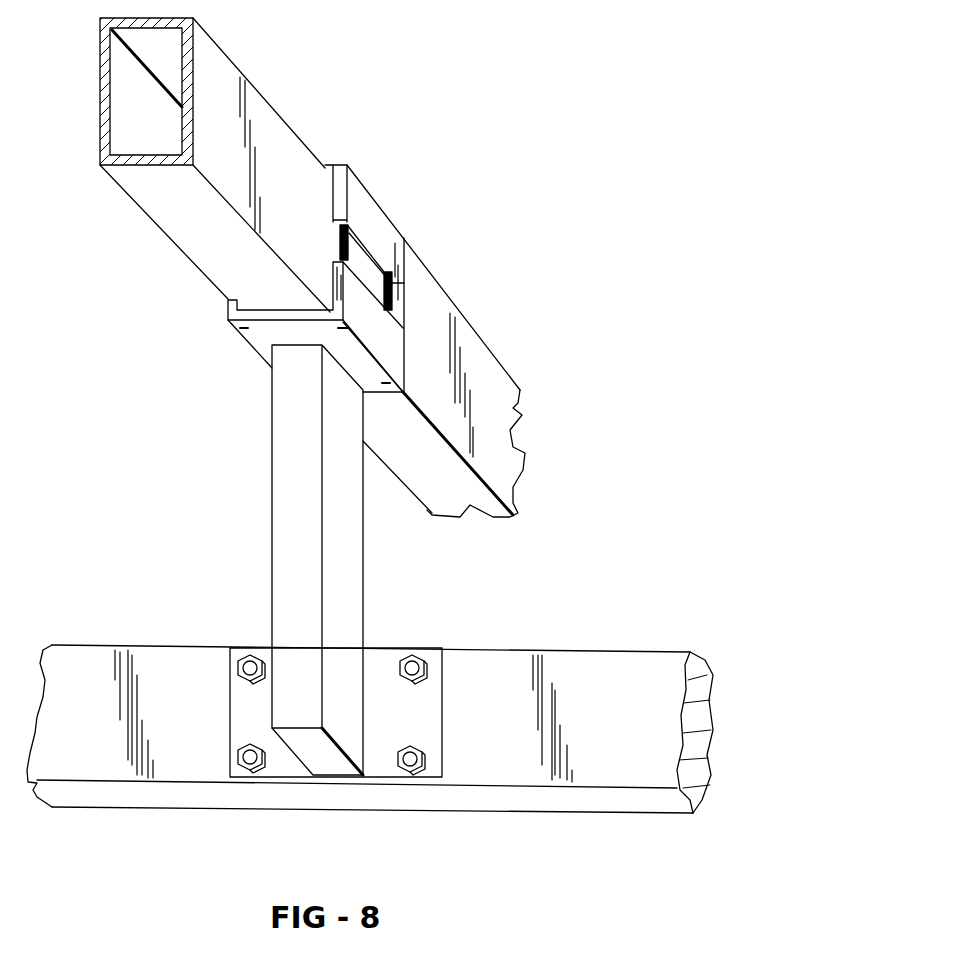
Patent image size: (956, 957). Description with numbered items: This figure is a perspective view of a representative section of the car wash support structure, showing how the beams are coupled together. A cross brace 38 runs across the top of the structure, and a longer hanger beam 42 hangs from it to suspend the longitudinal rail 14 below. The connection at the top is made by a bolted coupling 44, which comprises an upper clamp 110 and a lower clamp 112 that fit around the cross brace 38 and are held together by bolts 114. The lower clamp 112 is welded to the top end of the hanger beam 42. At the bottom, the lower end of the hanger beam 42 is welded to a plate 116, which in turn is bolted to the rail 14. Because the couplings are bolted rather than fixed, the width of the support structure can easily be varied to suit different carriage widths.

The longitudinal rail 14 is at (637, 648).
The cross-beam 38 is at (480, 367).
The hanger beam 42 is at (288, 498).
The bolted coupling 44 is at (377, 193).
The upper clamp 110 is at (397, 222).
The lower clamp 112 is at (258, 337).
The bolts 114 is at (338, 233).
The plate 116 is at (388, 668).